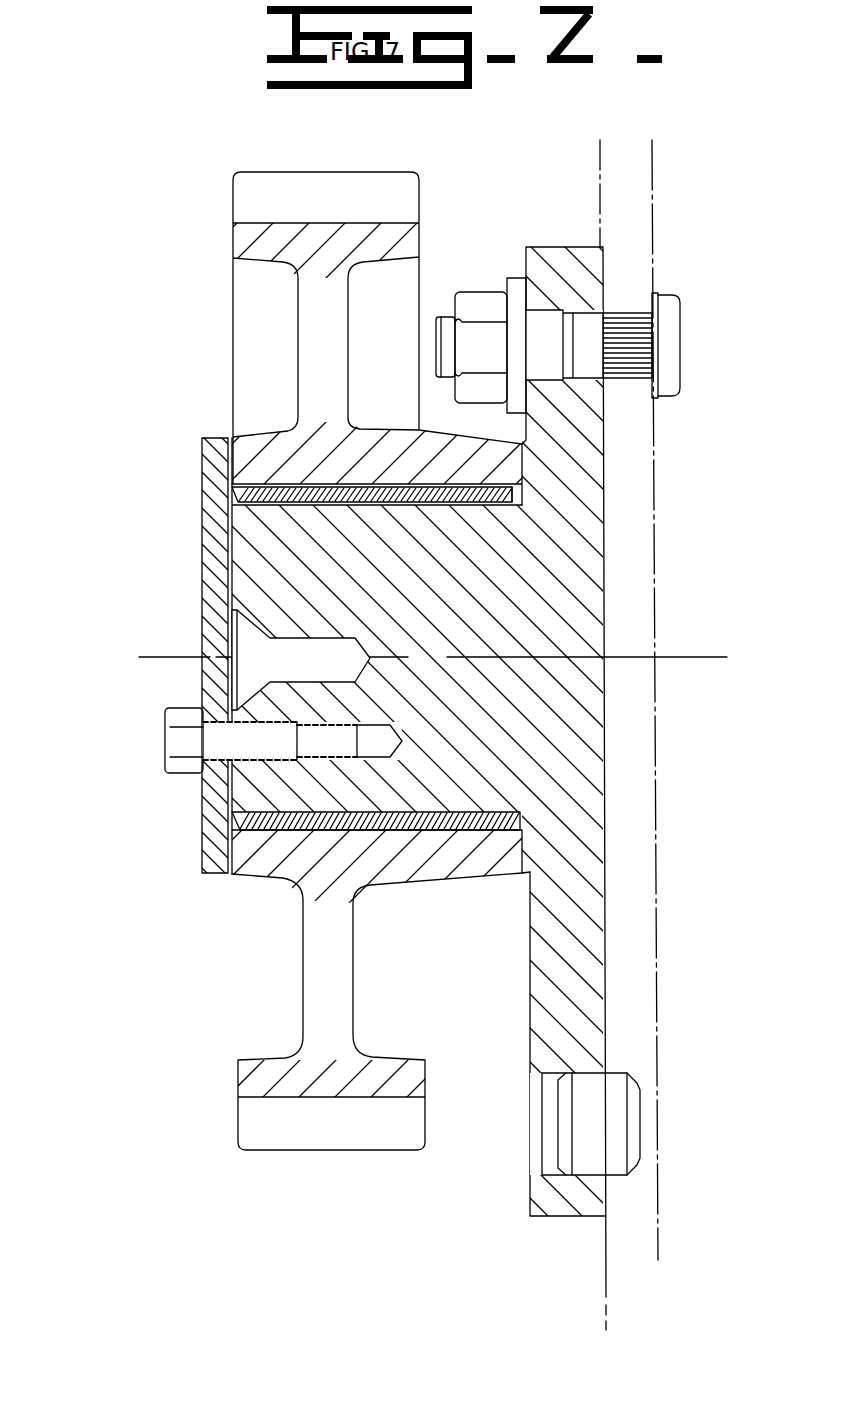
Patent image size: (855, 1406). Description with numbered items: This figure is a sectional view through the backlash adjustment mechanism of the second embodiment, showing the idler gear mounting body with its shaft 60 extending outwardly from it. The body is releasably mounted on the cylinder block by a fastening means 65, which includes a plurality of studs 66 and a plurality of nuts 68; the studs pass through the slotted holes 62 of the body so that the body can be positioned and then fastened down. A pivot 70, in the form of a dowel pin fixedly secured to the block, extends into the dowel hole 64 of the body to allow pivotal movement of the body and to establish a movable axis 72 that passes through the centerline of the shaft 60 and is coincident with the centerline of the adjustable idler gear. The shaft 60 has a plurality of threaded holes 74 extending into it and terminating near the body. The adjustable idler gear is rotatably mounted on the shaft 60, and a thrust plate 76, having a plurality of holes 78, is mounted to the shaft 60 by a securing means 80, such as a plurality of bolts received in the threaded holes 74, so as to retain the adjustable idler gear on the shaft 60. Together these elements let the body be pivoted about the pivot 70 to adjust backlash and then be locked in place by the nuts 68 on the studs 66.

The shaft 60 is at (228, 807).
The slotted holes 62 is at (572, 289).
The dowel hole 64 is at (568, 1174).
The fastening means 65 is at (627, 311).
The studs 66 is at (622, 311).
The nuts 68 is at (467, 291).
The pivot 70 is at (583, 1090).
The movable axis 72 is at (167, 657).
The threaded holes 74 is at (383, 763).
The thrust plate 76 is at (201, 478).
The holes 78 is at (203, 697).
The securing means 80 is at (164, 736).